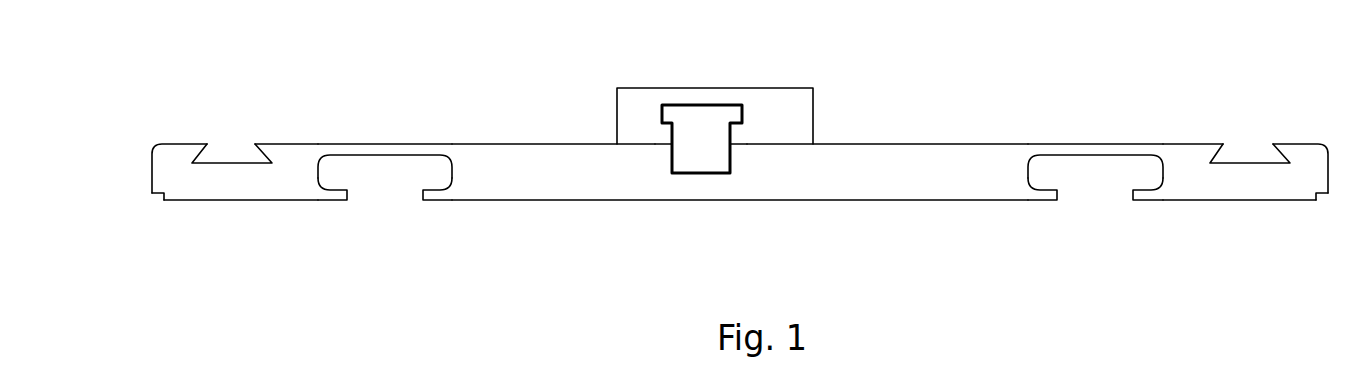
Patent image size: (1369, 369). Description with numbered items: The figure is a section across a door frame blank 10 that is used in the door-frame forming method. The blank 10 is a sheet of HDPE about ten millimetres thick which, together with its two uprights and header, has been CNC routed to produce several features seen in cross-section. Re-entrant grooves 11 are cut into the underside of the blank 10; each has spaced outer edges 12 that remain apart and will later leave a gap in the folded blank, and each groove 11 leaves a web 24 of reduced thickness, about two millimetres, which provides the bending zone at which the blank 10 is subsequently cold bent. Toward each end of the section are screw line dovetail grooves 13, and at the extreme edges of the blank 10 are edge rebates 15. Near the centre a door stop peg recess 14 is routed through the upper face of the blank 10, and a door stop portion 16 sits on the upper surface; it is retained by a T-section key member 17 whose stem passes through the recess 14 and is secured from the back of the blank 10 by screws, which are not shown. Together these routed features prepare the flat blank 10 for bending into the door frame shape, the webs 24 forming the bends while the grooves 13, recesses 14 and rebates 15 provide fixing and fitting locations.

The door frame blank 10 is at (927, 183).
The re-entrant groove 11 is at (385, 180).
The spaced outer edge 12 is at (338, 194).
The screw line dovetail groove 13 is at (230, 150).
The door stop peg recess 14 is at (672, 162).
The edge rebate 15 is at (160, 193).
The door stop portion 16 is at (782, 113).
The T-section key member 17 is at (700, 123).
The web 24 is at (385, 145).